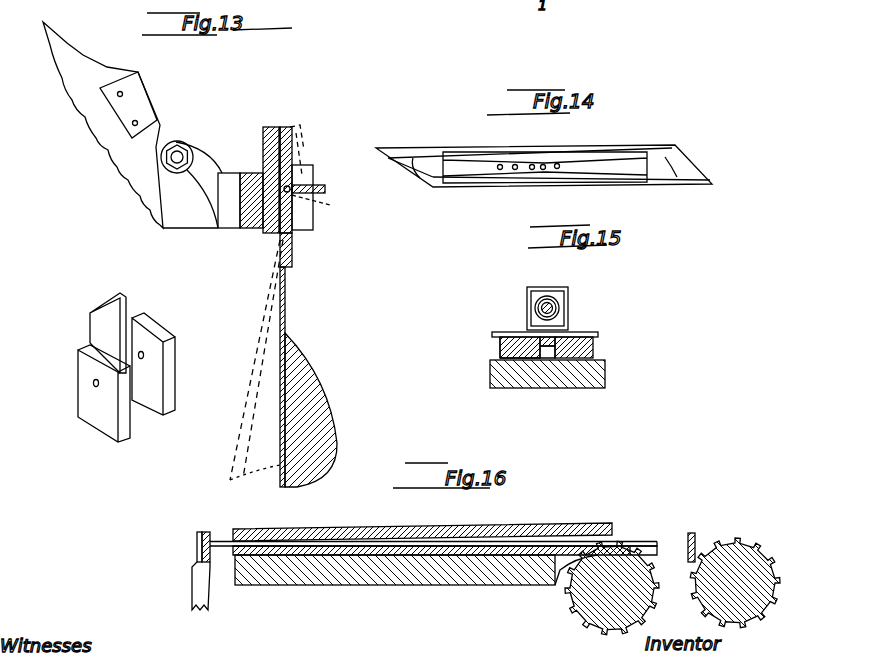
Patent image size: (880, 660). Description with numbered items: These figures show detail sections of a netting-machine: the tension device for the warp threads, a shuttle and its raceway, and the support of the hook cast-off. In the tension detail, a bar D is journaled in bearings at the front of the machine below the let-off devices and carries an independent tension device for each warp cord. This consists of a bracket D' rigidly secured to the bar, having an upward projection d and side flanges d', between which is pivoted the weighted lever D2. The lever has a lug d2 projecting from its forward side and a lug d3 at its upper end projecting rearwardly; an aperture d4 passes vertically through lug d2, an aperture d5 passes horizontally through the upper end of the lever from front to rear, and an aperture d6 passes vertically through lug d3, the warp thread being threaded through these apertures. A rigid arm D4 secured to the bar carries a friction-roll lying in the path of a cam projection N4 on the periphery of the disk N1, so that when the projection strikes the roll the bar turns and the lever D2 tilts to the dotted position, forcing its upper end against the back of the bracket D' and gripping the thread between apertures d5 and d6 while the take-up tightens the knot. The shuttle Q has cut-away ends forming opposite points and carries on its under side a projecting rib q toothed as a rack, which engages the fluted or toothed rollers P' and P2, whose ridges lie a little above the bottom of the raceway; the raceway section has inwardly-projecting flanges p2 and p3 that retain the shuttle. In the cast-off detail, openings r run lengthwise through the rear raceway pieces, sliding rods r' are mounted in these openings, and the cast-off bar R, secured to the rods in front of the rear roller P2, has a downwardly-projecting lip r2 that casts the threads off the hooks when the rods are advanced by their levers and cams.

In FIG. 13, the disk N1 is at (65, 70).
In FIG. 13, the cam projection N4 is at (140, 72).
In FIG. 13, the rigid arm D4 is at (200, 182).
In FIG. 13, the bar D is at (240, 188).
In FIG. 13, the upward projection d is at (185, 250).
In FIG. 13, the lug d3 is at (270, 128).
In FIG. 13, the aperture d6 is at (282, 128).
In FIG. 13, the aperture d5 is at (290, 162).
In FIG. 13, the lug d2 is at (326, 189).
In FIG. 13, the aperture d4 is at (313, 192).
In FIG. 13, the side flanges d' is at (239, 290).
In FIG. 13, the bracket D' is at (170, 343).
In FIG. 13, the weighted lever D2 is at (285, 333).
In FIG. 14, the shuttle Q is at (432, 183).
In FIG. 15, the shuttle Q is at (552, 296).
In FIG. 15, the inwardly-projecting flange p2 is at (525, 330).
In FIG. 15, the inwardly-projecting flange p3 is at (570, 330).
In FIG. 16, the inwardly-projecting flange p3 is at (205, 531).
In FIG. 15, the projecting rib q is at (556, 347).
In FIG. 15, the support p' is at (500, 350).
In FIG. 15, the base bar P is at (547, 386).
In FIG. 16, the base bar P is at (416, 585).
In FIG. 16, the sliding rod r' is at (420, 528).
In FIG. 16, the opening r is at (433, 556).
In FIG. 16, the downwardly-projecting lip r2 is at (451, 556).
In FIG. 16, the cast-off bar R is at (648, 536).
In FIG. 16, the stop plate s is at (688, 542).
In FIG. 16, the toothed roller P2 is at (597, 606).
In FIG. 16, the toothed roller P' is at (735, 570).